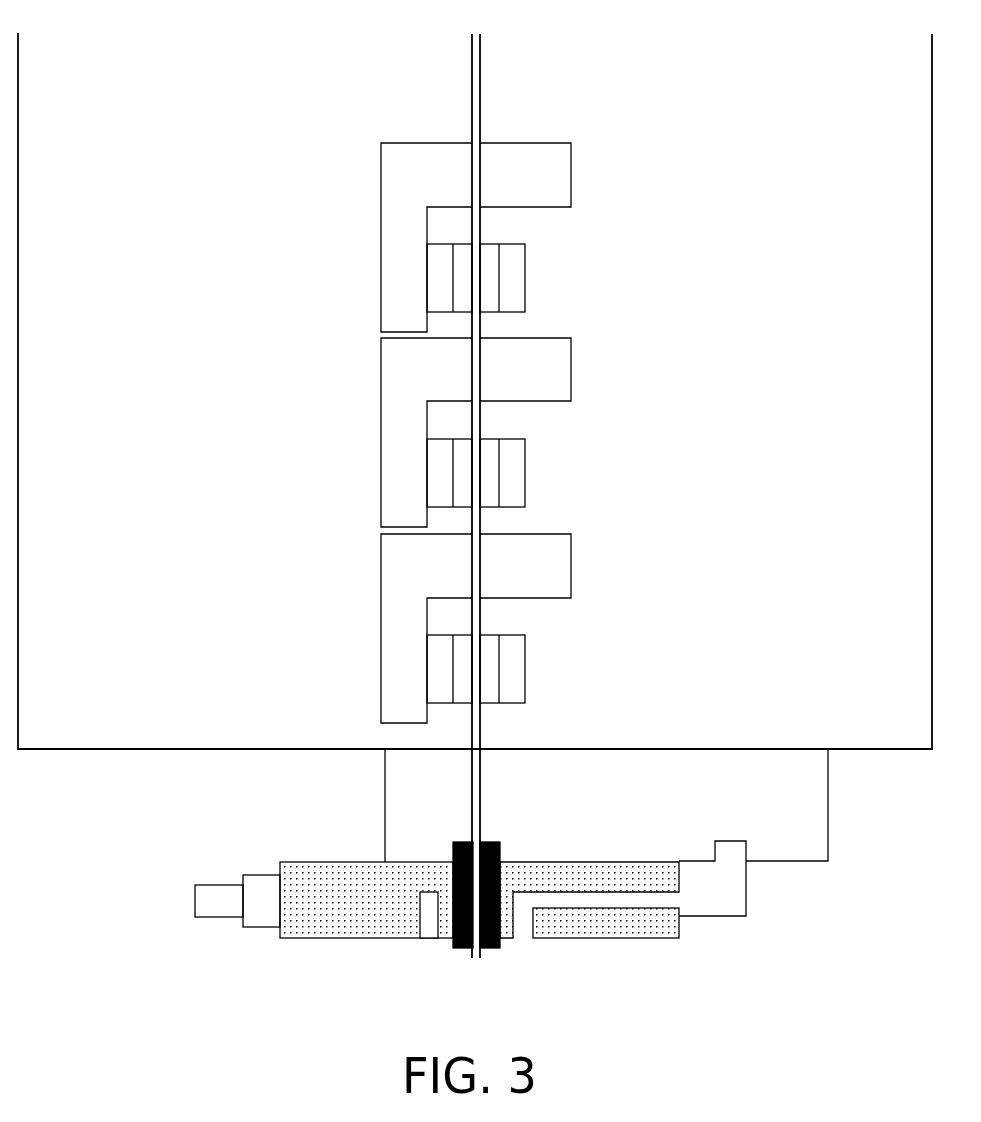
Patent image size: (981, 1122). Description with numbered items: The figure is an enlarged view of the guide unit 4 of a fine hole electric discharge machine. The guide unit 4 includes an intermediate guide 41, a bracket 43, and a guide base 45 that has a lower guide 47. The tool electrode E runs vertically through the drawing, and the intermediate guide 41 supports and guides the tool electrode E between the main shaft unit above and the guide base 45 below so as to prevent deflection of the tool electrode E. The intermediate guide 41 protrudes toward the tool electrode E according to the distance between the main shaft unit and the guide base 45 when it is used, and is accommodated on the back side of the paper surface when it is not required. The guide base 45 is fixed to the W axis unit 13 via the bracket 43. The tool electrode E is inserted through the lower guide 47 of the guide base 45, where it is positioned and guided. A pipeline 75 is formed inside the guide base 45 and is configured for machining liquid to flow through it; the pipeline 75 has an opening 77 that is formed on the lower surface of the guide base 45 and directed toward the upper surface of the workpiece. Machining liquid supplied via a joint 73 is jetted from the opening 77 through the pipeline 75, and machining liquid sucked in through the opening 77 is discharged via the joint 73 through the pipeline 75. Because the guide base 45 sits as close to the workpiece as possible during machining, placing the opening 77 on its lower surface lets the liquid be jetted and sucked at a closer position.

The W axis unit 13 is at (93, 734).
The tool electrode E is at (480, 67).
The intermediate guide 41 is at (516, 274).
The bracket 43 is at (808, 798).
The guide unit 4 is at (415, 898).
The guide base 45 is at (318, 870).
The lower guide 47 is at (458, 948).
The joint 73 is at (715, 905).
The pipeline 75 is at (602, 900).
The opening 77 is at (525, 940).